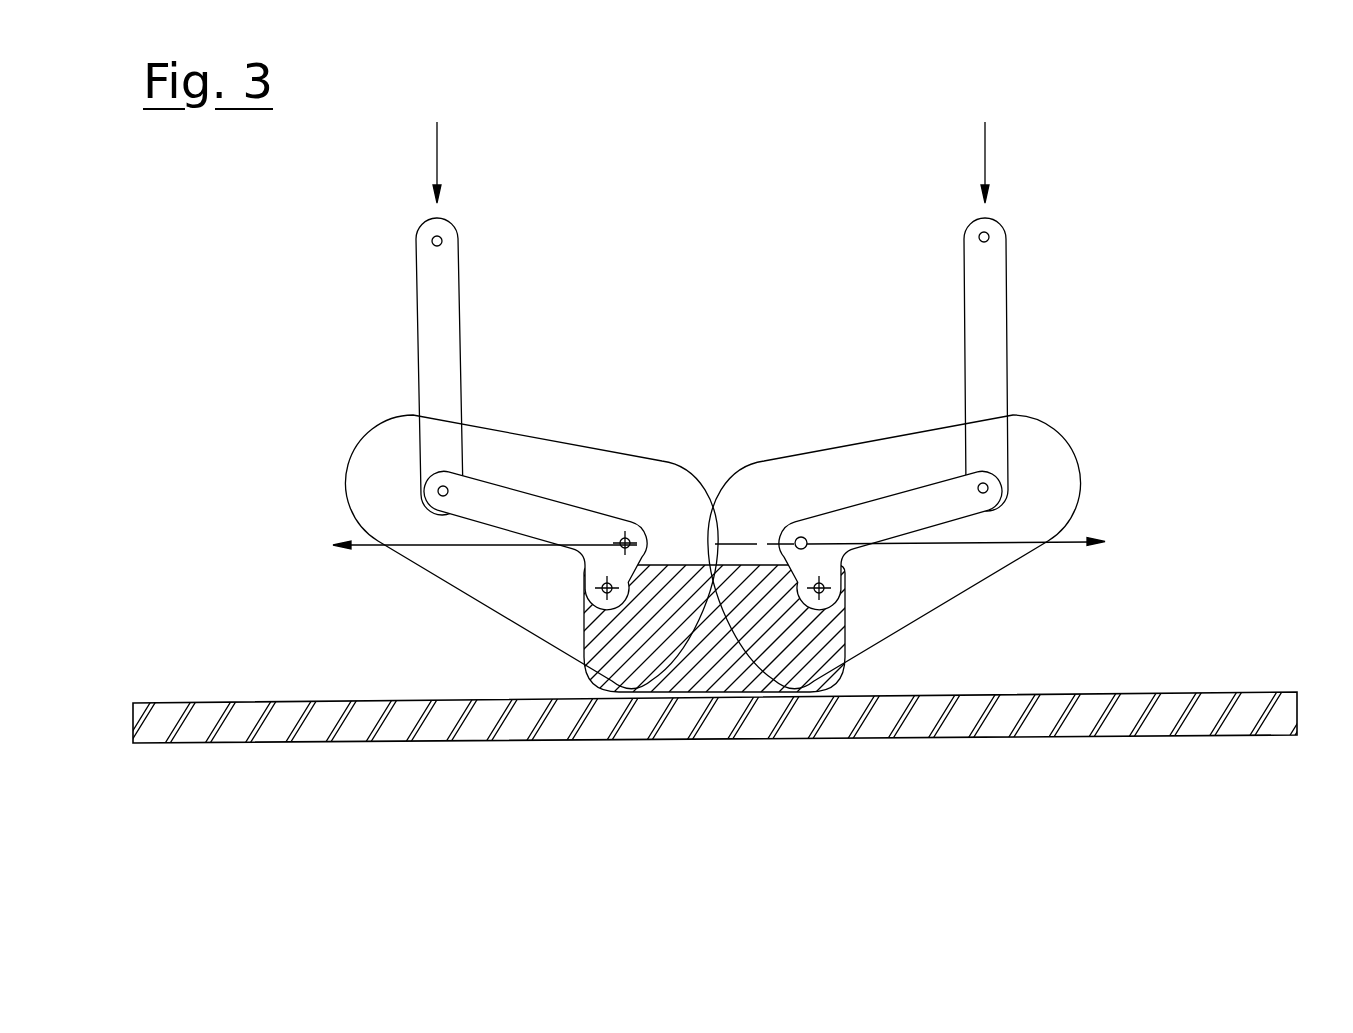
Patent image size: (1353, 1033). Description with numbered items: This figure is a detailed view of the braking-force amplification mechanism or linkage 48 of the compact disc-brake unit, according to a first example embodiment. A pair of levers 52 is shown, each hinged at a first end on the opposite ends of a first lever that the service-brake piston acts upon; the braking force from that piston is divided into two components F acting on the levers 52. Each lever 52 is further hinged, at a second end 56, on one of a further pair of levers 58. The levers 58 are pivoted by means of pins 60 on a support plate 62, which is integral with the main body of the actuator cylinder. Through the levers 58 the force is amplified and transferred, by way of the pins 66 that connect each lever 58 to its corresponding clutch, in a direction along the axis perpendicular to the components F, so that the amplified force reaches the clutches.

The mechanism or linkage 48 is at (715, 446).
The lever 52 is at (431, 333).
The second end 56 is at (433, 490).
The lever 58 is at (500, 510).
The pin 60 is at (596, 588).
The support plate 62 is at (780, 658).
The pin 66 is at (607, 586).